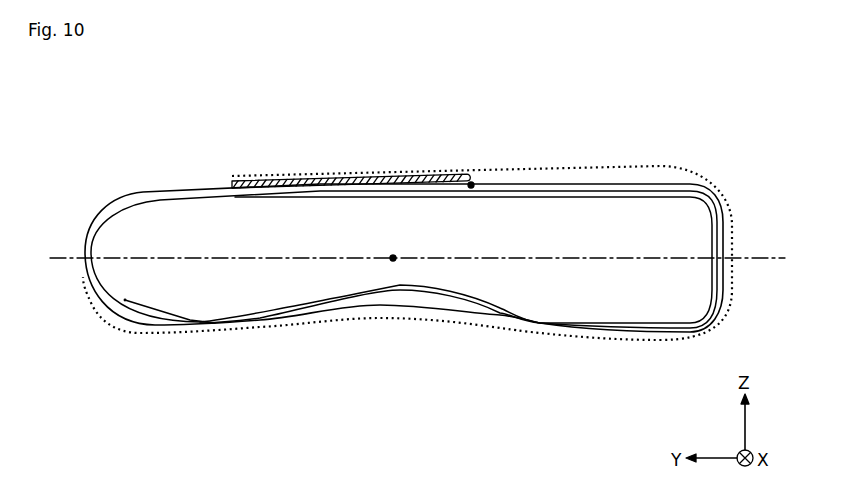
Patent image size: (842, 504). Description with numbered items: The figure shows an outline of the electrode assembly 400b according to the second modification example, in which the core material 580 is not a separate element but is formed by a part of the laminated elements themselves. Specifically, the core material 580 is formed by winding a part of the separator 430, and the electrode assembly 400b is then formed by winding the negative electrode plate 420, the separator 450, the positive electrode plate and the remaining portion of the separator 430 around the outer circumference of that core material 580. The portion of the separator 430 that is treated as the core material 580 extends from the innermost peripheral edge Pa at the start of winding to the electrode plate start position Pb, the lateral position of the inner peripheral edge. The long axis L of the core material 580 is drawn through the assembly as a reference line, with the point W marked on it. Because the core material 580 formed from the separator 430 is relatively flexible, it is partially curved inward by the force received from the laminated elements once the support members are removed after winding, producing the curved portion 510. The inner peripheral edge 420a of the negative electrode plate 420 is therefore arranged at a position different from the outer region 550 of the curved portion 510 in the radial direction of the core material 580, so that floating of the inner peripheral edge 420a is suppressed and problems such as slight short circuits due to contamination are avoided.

The core material 580 is at (138, 191).
The negative electrode plate 420 is at (322, 181).
The inner peripheral edge 420a is at (481, 175).
The electrode assembly 400b is at (795, 99).
The separator 430 is at (160, 310).
The curved portion 510 is at (303, 290).
The separator 450 is at (142, 334).
The outer region 550 is at (348, 343).
The innermost peripheral edge Pa is at (125, 300).
The electrode plate start position Pb is at (471, 188).
The center point W is at (393, 255).
The long axis L is at (756, 257).